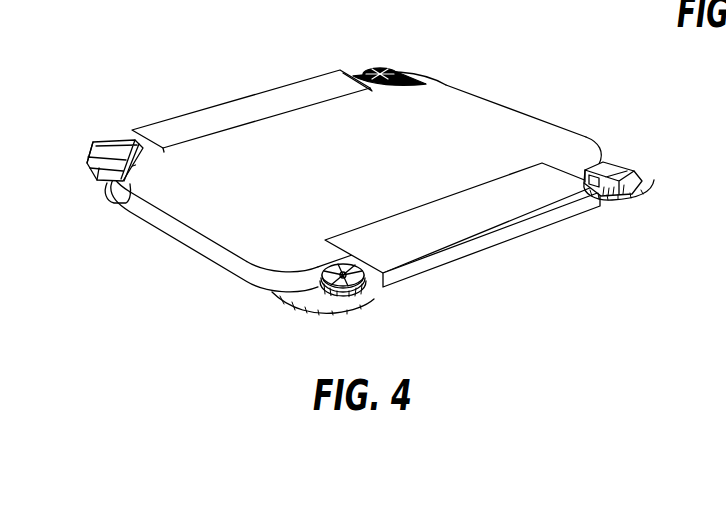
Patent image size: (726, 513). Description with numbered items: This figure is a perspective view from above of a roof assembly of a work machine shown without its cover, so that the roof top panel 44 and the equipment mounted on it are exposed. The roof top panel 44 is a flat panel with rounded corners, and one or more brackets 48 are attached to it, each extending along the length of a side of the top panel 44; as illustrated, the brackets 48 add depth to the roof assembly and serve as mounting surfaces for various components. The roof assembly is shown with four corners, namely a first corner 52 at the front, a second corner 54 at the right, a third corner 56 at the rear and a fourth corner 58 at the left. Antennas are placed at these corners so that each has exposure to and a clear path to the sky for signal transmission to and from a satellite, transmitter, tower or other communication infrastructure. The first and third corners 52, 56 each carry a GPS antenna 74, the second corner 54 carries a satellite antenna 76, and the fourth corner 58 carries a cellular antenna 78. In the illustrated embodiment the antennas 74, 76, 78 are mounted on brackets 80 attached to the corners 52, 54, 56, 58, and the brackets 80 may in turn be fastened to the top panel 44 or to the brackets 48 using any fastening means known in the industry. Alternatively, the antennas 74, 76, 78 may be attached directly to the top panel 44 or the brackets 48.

The roof top panel 44 is at (276, 193).
The brackets 48 is at (263, 103).
The first corner 52 is at (284, 312).
The second corner 54 is at (658, 203).
The third corner 56 is at (390, 54).
The fourth corner 58 is at (80, 142).
The GPS antennas 74 is at (373, 68).
The satellite antenna 76 is at (608, 170).
The cellular antenna 78 is at (117, 140).
The brackets 80 is at (412, 78).